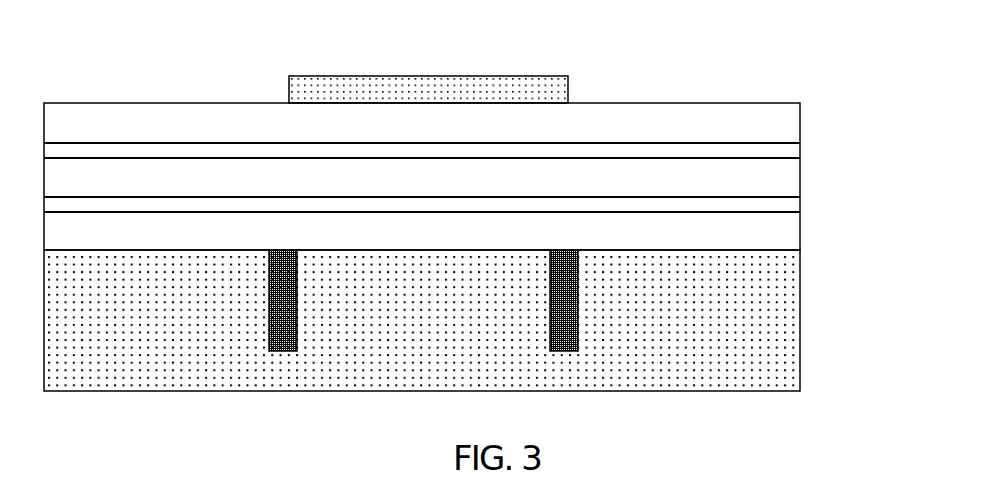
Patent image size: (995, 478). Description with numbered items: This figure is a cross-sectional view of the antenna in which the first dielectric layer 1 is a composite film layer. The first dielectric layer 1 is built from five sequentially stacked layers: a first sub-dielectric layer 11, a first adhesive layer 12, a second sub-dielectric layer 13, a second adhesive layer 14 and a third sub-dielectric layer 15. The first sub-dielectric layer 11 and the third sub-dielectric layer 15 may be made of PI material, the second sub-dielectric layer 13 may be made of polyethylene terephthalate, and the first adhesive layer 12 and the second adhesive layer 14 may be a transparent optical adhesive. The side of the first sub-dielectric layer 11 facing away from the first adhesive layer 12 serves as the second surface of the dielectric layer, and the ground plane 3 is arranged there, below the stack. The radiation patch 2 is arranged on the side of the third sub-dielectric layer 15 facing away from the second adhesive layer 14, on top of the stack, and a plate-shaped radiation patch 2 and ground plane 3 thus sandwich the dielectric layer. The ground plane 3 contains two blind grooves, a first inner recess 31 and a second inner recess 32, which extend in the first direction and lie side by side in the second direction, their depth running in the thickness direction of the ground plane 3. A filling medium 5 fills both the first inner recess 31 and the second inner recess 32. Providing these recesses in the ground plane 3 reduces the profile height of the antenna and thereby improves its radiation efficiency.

The first dielectric layer 1 is at (491, 177).
The radiation patch 2 is at (517, 93).
The ground plane 3 is at (782, 333).
The filling medium 5 is at (472, 307).
The first sub-dielectric layer 11 is at (829, 239).
The first adhesive layer 12 is at (782, 207).
The second sub-dielectric layer 13 is at (785, 177).
The second adhesive layer 14 is at (783, 153).
The third sub-dielectric layer 15 is at (783, 118).
The first inner recess 31 is at (298, 272).
The second inner recess 32 is at (578, 278).